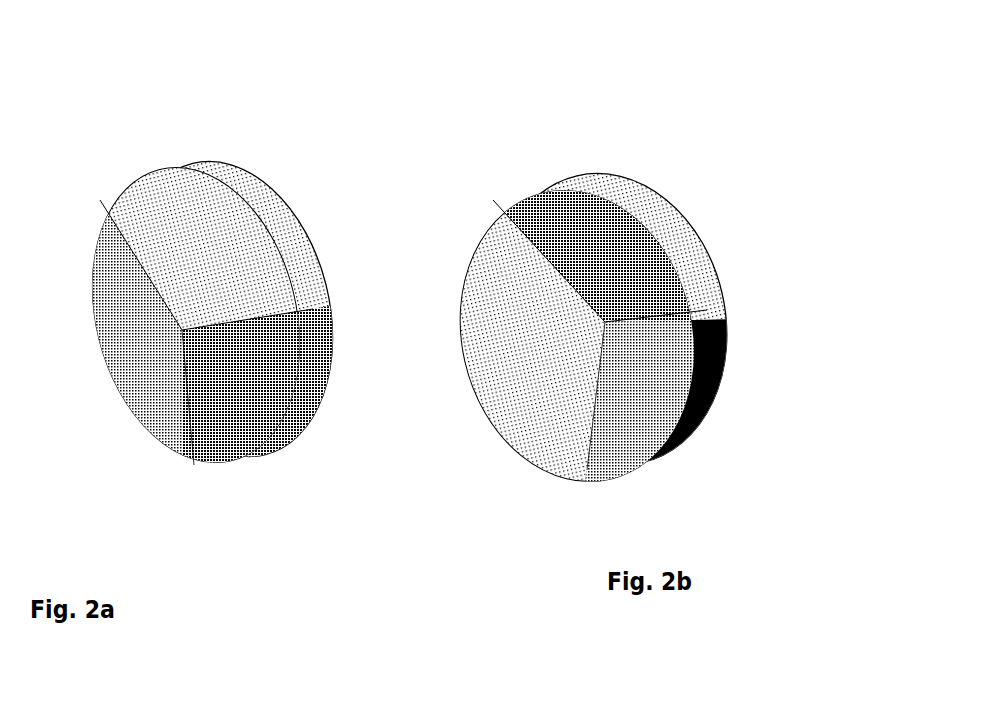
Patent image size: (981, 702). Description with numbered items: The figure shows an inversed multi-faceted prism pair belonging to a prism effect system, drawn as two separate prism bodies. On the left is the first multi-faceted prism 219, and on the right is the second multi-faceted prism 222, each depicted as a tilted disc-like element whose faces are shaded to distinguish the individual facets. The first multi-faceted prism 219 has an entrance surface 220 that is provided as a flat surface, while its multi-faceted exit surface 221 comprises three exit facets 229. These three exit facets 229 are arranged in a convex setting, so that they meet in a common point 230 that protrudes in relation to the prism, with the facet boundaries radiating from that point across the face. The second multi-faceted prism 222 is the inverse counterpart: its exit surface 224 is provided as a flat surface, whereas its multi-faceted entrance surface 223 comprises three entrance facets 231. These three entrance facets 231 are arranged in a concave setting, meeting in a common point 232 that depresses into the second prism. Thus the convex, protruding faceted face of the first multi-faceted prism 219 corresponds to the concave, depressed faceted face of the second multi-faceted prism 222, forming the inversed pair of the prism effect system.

In FIG. 2A, the first multi-faceted prism 219 is at (288, 351).
In FIG. 2A, the entrance surface 220 is at (314, 256).
In FIG. 2A, the multi-faceted exit surface 221 is at (47, 223).
In FIG. 2A, the exit facets 229 is at (160, 233).
In FIG. 2A, the common point 230 is at (182, 330).
In FIG. 2B, the second multi-faceted prism 222 is at (640, 351).
In FIG. 2B, the multi-faceted entrance surface 223 is at (455, 210).
In FIG. 2B, the exit surface 224 is at (740, 309).
In FIG. 2B, the entrance facets 231 is at (560, 270).
In FIG. 2B, the common point 232 is at (605, 322).